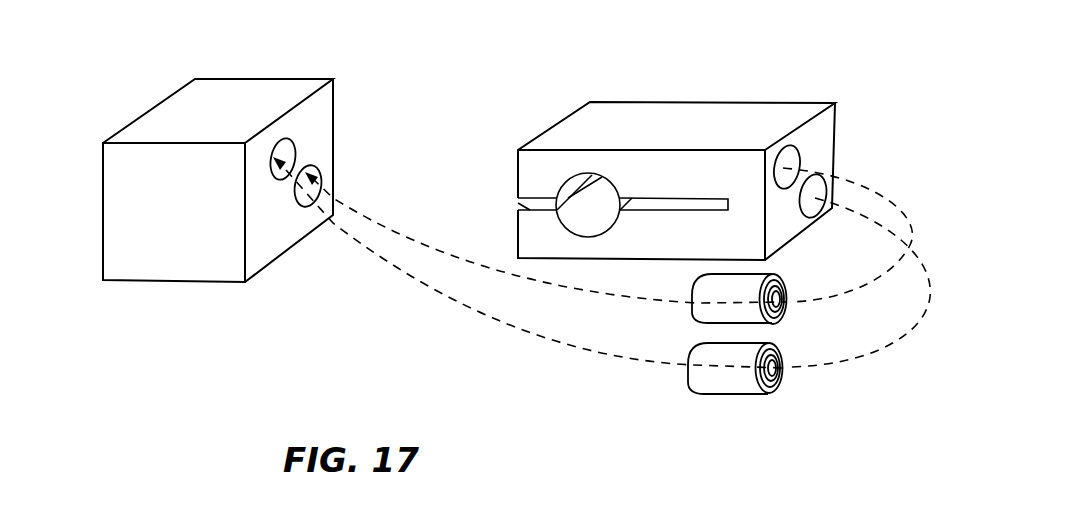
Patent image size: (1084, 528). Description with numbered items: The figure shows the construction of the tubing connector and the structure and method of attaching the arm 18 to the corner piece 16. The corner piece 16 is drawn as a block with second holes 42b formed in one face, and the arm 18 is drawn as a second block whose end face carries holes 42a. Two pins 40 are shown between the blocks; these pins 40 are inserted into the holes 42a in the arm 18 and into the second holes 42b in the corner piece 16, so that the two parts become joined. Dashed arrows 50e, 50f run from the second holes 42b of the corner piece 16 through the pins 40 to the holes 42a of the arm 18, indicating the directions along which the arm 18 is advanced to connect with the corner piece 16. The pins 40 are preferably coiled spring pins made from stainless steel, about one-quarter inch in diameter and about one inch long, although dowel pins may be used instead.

The corner piece 16 is at (200, 247).
The arm 18 is at (592, 113).
The pins 40 is at (797, 303).
The holes 42a is at (788, 161).
The second holes 42b is at (284, 152).
The arrow 50e is at (523, 333).
The arrow 50f is at (608, 290).